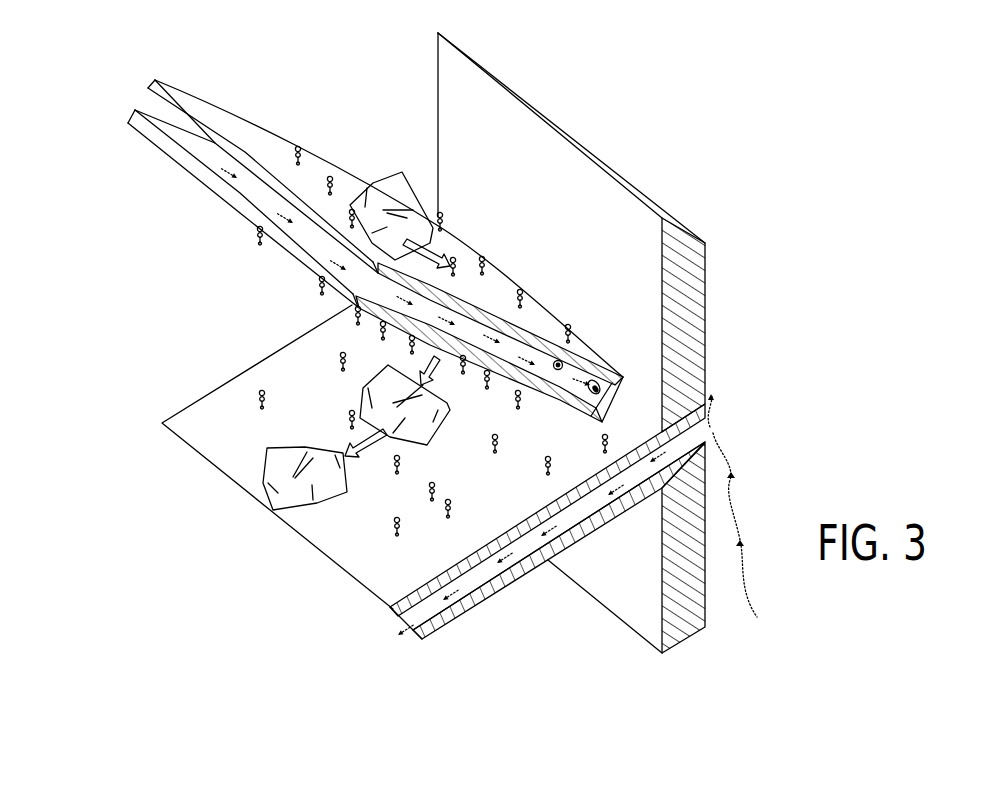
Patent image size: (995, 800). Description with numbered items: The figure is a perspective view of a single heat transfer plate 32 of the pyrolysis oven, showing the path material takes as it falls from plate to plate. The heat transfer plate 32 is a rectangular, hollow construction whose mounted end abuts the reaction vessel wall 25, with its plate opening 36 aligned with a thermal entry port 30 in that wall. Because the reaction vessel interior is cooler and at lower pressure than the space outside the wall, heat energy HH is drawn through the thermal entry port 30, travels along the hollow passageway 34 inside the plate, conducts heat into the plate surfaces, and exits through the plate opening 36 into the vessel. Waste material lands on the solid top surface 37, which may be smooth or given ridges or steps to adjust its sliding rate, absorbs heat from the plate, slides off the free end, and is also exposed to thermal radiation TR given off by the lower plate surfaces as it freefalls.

The heat transfer plate 32 is at (146, 137).
The reaction vessel wall 25 is at (707, 327).
The plate opening 36 is at (622, 403).
The thermal entry port 30 is at (705, 426).
The passageway 34 is at (430, 616).
The top surface 37 is at (205, 420).
The thermal radiation TR is at (332, 180).
The heat energy HH is at (737, 530).